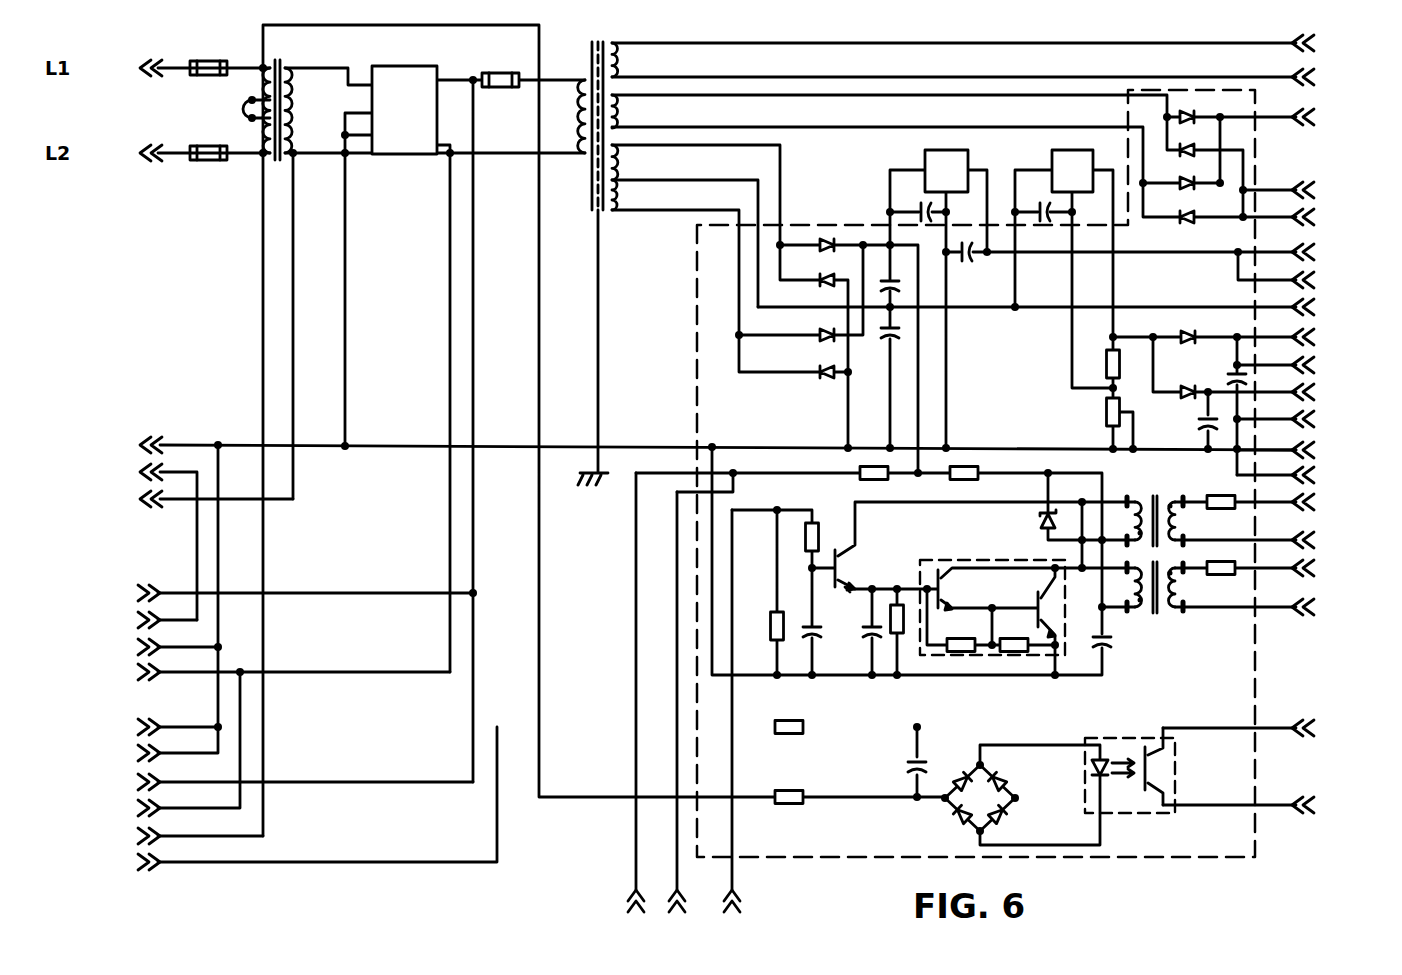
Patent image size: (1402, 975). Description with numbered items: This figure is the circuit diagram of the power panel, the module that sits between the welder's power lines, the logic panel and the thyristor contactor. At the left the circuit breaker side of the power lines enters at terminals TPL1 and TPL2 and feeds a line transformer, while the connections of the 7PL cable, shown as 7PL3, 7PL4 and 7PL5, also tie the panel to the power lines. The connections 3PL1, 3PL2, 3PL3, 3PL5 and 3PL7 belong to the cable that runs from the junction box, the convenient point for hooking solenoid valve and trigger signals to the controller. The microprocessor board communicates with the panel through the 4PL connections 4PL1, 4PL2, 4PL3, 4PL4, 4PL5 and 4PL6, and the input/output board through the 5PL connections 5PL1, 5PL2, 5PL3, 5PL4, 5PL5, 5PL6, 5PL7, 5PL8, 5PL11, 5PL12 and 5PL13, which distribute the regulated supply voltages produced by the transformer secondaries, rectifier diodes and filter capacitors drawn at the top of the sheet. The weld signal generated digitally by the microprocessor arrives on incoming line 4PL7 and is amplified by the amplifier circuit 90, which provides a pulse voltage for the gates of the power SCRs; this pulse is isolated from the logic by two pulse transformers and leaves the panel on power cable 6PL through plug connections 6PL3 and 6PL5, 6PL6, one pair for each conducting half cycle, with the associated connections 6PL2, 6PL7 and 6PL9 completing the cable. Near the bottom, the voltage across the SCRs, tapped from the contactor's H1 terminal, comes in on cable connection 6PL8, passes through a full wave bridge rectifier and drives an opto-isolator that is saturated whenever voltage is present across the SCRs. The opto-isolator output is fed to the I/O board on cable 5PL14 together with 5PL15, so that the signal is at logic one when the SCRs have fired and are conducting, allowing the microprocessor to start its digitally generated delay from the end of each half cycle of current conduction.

The amplifier circuit 90 is at (957, 539).
The line input terminal TPL1 is at (136, 68).
The line input terminal TPL2 is at (136, 153).
The terminal 7PL3 is at (136, 447).
The terminal 7PL4 is at (136, 474).
The terminal 7PL5 is at (136, 501).
The terminal 3PL1 is at (272, 587).
The terminal 3PL2 is at (134, 614).
The terminal 3PL3 is at (136, 649).
The terminal 3PL5 is at (261, 667).
The terminal 4PL3 is at (136, 729).
The terminal 5PL3 is at (136, 755).
The terminal 5PL6 is at (272, 777).
The terminal 5PL5 is at (156, 744).
The terminal 6PL9 is at (167, 830).
The cable connection 6PL8 is at (284, 798).
The terminal 5PL11 is at (605, 692).
The terminal 6PL7 is at (681, 715).
The incoming line 4PL7 is at (760, 711).
The terminal 5PL7 is at (1385, 46).
The terminal 5PL8 is at (1385, 80).
The terminal 5PL12 is at (1385, 120).
The terminal 3PL7 is at (1385, 192).
The terminal 5PL13 is at (1385, 220).
The terminal 4PL4 is at (1385, 254).
The terminal 5PL4 is at (1385, 282).
The terminal 4PL5 is at (1385, 310).
The terminal 4PL1 is at (1385, 339).
The terminal 5PL1 is at (1385, 367).
The terminal 4PL6 is at (1385, 394).
The terminal 4PL2 is at (1385, 421).
The terminal 5PL2 is at (1385, 452).
The terminal 6PL2 is at (1385, 477).
The plug connection 6PL5 is at (1273, 503).
The plug connection 6PL6 is at (1273, 541).
The plug connection 6PL3 is at (1273, 569).
The power cable 6PL is at (1267, 608).
The cable 5PL14 is at (1385, 730).
The terminal 5PL15 is at (1385, 807).